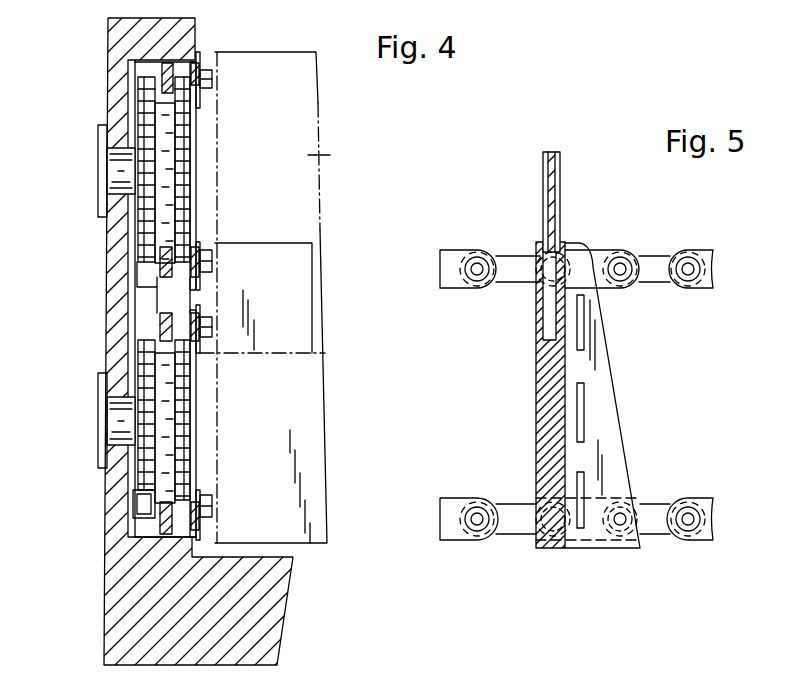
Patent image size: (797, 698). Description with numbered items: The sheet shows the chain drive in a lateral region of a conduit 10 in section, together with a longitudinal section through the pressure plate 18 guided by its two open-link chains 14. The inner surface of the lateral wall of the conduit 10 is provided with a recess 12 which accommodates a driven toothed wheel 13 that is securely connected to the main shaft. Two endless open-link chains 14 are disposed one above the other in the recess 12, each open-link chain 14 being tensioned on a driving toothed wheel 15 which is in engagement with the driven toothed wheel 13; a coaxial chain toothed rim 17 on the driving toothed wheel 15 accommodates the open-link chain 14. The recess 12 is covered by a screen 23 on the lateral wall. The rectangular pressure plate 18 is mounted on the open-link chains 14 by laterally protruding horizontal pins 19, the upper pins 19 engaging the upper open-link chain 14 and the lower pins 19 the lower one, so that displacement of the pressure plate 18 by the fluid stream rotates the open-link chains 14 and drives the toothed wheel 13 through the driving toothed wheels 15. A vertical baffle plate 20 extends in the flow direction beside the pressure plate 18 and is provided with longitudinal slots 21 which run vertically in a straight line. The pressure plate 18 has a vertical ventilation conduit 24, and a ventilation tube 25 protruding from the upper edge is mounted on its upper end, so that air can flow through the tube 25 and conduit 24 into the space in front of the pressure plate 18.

In FIG. 4, the conduit 10 is at (296, 549).
In FIG. 4, the recess 12 is at (138, 527).
In FIG. 4, the driven toothed wheel 13 is at (147, 296).
In FIG. 4, the open-link chain 14 is at (200, 98).
In FIG. 5, the open-link chain 14 is at (450, 255).
In FIG. 4, the driving toothed wheel 15 is at (150, 108).
In FIG. 4, the chain toothed rim 17 is at (183, 138).
In FIG. 4, the pressure plate 18 is at (330, 155).
In FIG. 5, the pressure plate 18 is at (548, 410).
In FIG. 4, the pin 19 is at (208, 75).
In FIG. 5, the pin 19 is at (525, 290).
In FIG. 5, the baffle plate 20 is at (610, 445).
In FIG. 5, the longitudinal slot 21 is at (586, 345).
In FIG. 4, the screen 23 is at (194, 183).
In FIG. 5, the ventilation conduit 24 is at (545, 340).
In FIG. 5, the ventilation tube 25 is at (543, 182).